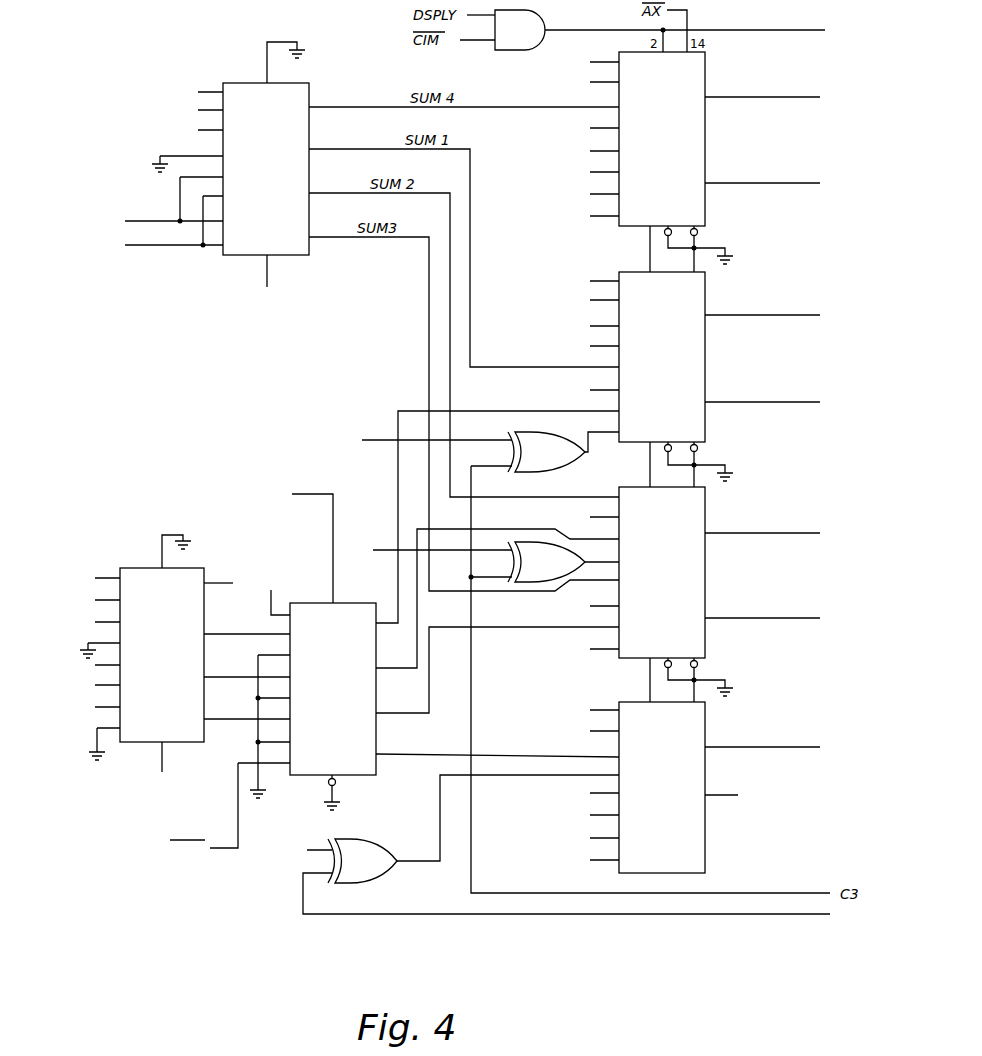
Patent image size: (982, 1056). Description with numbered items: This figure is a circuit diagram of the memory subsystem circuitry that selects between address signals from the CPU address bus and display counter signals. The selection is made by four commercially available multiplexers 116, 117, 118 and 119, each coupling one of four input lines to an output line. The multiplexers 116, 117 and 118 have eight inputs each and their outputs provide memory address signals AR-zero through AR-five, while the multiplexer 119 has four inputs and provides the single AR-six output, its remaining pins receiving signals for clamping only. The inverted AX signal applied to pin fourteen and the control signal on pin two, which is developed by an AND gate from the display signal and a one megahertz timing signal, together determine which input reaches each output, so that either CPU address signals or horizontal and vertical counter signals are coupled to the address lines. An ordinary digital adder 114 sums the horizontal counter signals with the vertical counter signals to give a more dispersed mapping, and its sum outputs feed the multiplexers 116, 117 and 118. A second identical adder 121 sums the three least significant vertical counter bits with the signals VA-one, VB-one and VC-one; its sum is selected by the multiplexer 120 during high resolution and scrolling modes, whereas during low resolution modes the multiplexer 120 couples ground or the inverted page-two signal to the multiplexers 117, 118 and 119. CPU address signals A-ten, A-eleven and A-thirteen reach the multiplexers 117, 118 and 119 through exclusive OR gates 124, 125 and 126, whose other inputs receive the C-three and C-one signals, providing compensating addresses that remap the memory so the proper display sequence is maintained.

The adder 114 is at (243, 255).
The multiplexer 116 is at (703, 154).
The multiplexer 117 is at (695, 378).
The multiplexer 118 is at (692, 548).
The multiplexer 119 is at (695, 722).
The multiplexer 120 is at (310, 606).
The adder 121 is at (137, 571).
The exclusive OR gate 124 is at (572, 464).
The exclusive OR gate 125 is at (548, 557).
The exclusive OR gate 126 is at (372, 848).